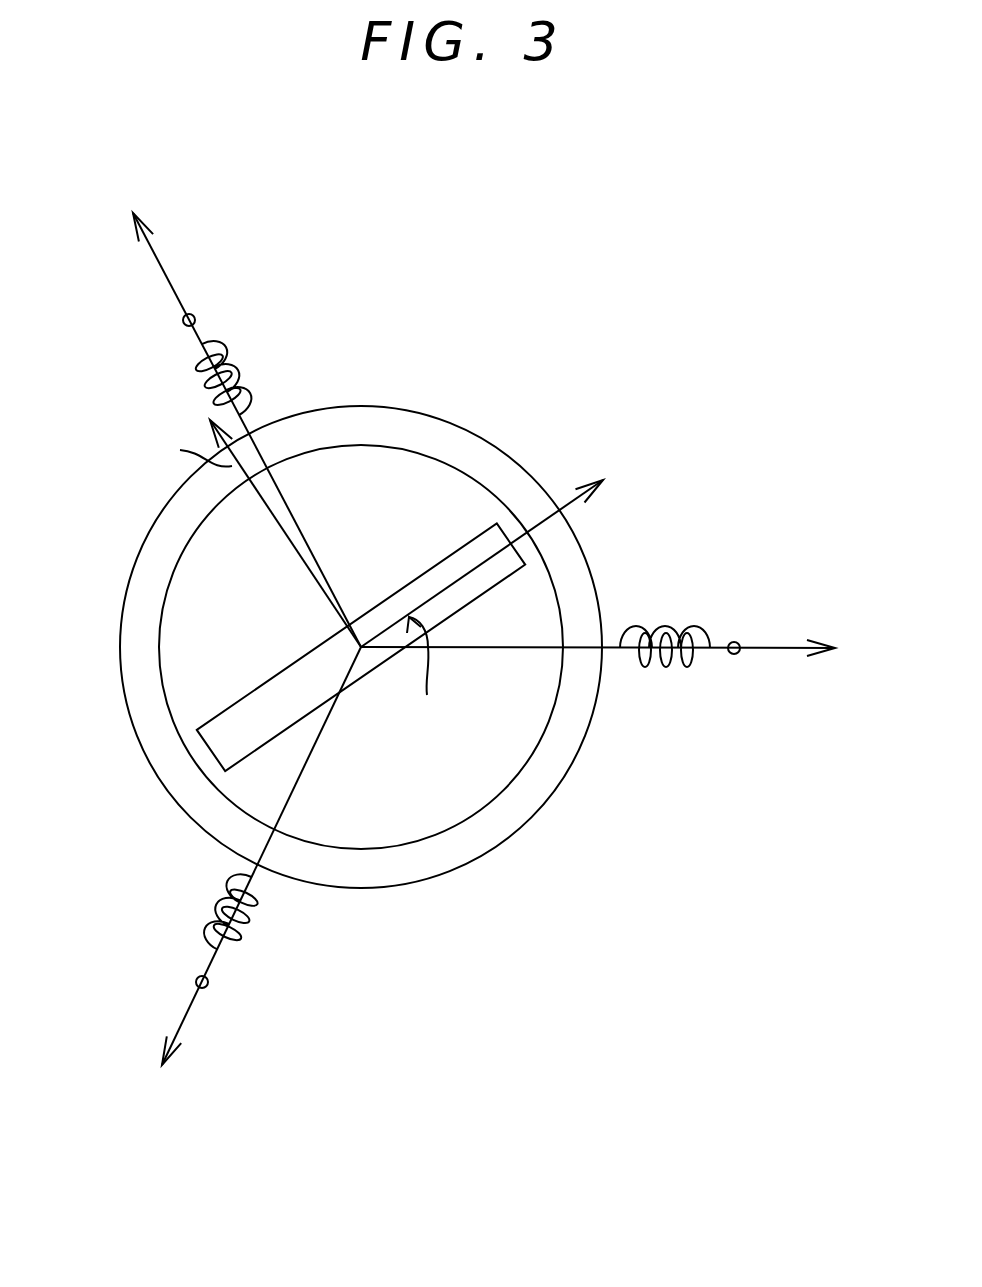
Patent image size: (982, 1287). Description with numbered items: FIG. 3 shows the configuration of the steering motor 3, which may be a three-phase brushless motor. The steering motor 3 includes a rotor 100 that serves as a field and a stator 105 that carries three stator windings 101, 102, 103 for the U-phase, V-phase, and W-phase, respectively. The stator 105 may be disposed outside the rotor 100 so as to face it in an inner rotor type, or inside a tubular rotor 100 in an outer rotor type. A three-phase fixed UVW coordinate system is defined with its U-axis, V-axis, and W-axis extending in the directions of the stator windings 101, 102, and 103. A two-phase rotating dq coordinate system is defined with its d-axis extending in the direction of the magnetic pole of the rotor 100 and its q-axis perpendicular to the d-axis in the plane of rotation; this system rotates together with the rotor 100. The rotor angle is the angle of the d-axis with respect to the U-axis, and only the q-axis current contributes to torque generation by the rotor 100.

The steering motor 3 is at (515, 303).
The rotor 100 is at (268, 702).
The stator winding 101 is at (655, 625).
The stator winding 102 is at (231, 356).
The stator winding 103 is at (208, 912).
The stator 105 is at (552, 762).